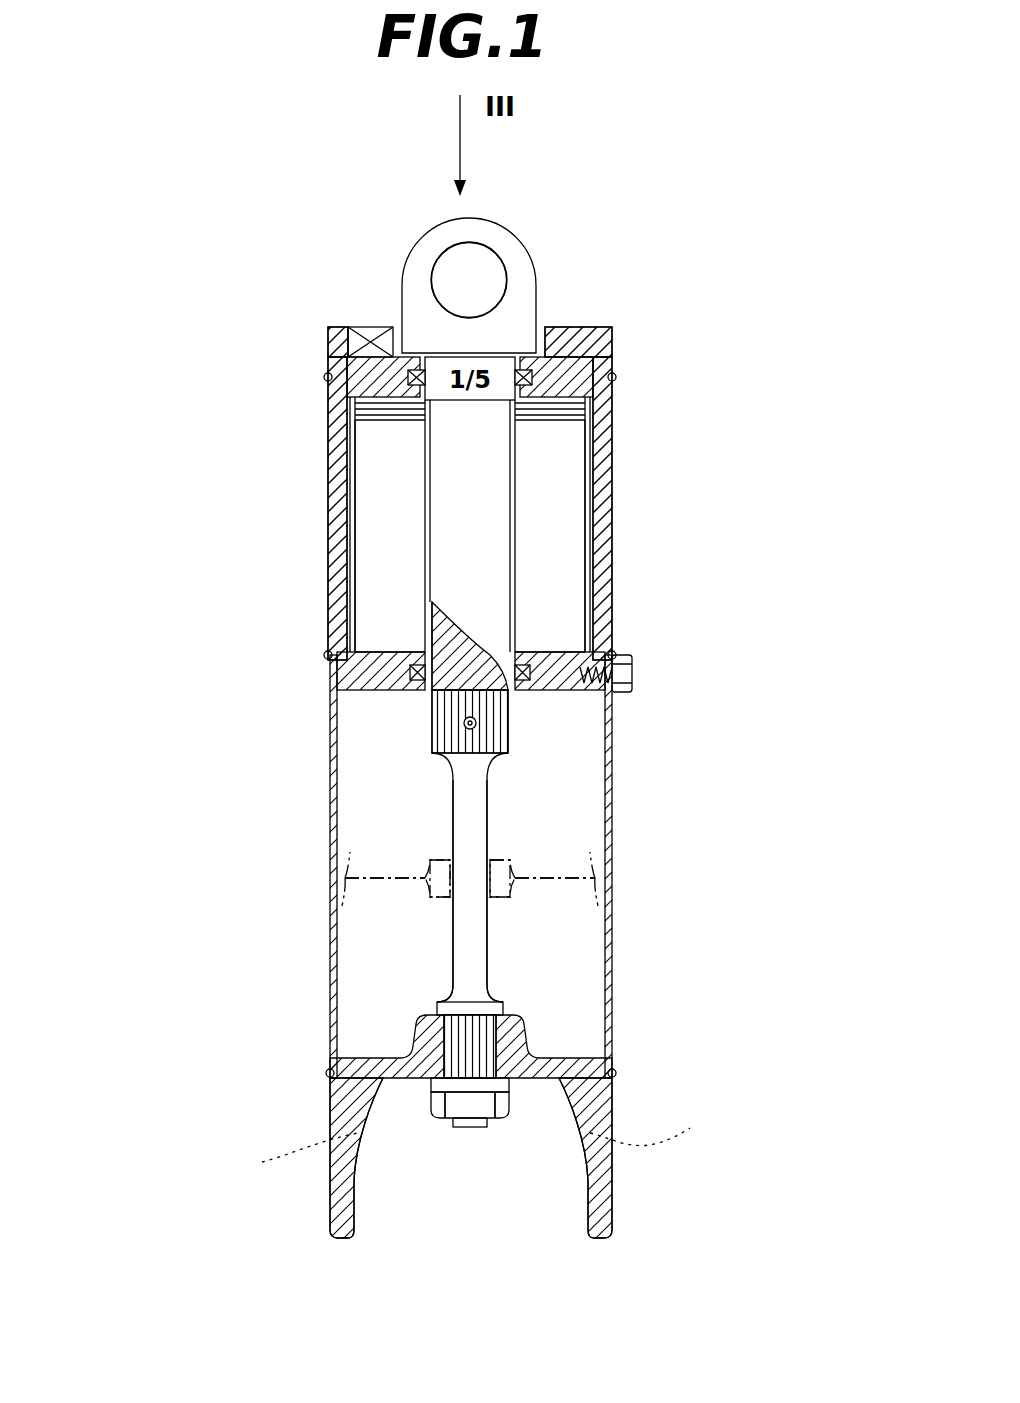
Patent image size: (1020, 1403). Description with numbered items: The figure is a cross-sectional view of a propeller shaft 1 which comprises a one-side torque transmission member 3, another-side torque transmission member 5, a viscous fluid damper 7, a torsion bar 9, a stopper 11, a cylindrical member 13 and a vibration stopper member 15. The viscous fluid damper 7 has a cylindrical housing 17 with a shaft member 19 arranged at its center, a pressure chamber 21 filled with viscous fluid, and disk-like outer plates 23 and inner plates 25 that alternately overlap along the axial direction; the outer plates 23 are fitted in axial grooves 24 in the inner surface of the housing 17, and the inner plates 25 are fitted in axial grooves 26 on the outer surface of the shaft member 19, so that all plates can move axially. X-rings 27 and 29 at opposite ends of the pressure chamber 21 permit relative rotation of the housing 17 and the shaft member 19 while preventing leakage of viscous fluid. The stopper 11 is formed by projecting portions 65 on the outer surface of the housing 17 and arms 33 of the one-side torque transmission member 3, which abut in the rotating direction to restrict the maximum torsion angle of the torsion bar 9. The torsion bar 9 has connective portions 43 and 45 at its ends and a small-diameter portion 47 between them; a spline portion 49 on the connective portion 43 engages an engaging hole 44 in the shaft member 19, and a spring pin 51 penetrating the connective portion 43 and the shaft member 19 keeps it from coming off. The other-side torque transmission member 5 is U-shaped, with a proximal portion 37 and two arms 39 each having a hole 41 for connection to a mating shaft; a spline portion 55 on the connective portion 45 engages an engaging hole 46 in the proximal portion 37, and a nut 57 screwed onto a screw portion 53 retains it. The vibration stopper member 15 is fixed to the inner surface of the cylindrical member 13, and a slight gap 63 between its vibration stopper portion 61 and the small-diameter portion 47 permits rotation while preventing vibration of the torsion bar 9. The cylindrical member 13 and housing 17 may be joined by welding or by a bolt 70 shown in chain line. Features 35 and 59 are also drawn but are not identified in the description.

The propeller shaft 1 is at (614, 188).
The one-side torque transmission member 3 is at (416, 238).
The arms of one-side torque transmission member 33 is at (510, 240).
The mounting bore 35 is at (442, 252).
The stopper 11 is at (547, 290).
The projecting portions 65 is at (372, 337).
The X-ring 27 is at (408, 377).
The viscous fluid damper 7 is at (644, 493).
The cylindrical housing 17 is at (612, 585).
The grooves 26 is at (425, 565).
The outer plates 23 is at (360, 420).
The inner plates 25 is at (532, 420).
The grooves 24 is at (350, 561).
The shaft member 19 is at (452, 556).
The pressure chamber 21 is at (533, 556).
The X-ring 29 is at (412, 672).
The bolt 70 is at (634, 670).
The torsion bar 9 is at (548, 860).
The engaging hole 44 is at (490, 740).
The spline portion 49 is at (485, 708).
The spring pin 51 is at (466, 723).
The connective portion 43 is at (445, 760).
The small-diameter portion 47 is at (487, 788).
The connective portion 45 is at (440, 1008).
The spline portion 55 is at (492, 1003).
The vibration stopper member 15 is at (376, 859).
The phantom arm 59 is at (348, 878).
The gap 63 is at (450, 860).
The vibration stopper portion 61 is at (428, 886).
The cylindrical member 13 is at (612, 995).
The another-side torque transmission member 5 is at (386, 1116).
The engaging hole 46 is at (530, 1060).
The proximal portion 37 is at (520, 1078).
The screw portion 53 is at (470, 1128).
The nut 57 is at (437, 1100).
The hole 41 is at (475, 1140).
The arms 39 is at (342, 1240).